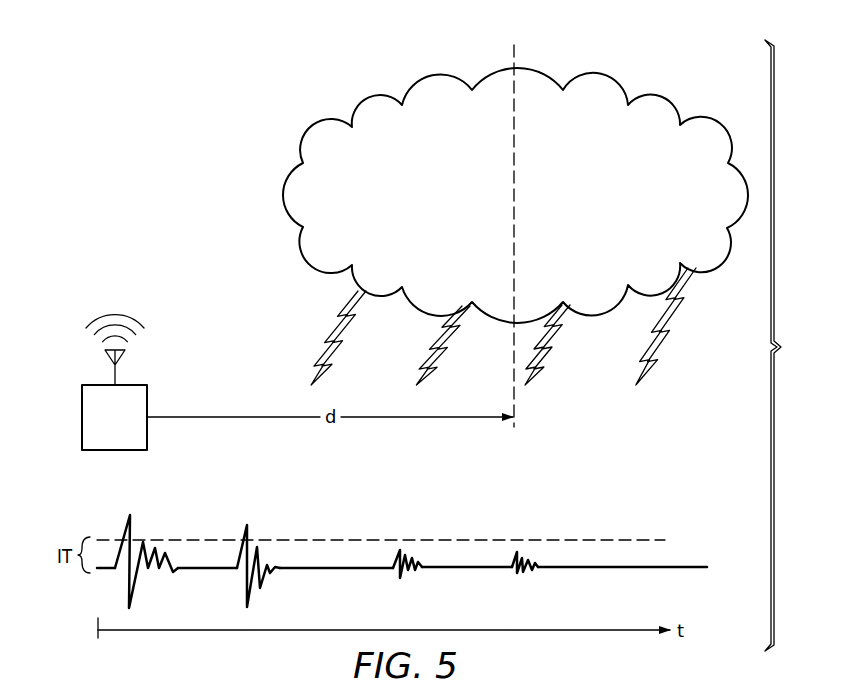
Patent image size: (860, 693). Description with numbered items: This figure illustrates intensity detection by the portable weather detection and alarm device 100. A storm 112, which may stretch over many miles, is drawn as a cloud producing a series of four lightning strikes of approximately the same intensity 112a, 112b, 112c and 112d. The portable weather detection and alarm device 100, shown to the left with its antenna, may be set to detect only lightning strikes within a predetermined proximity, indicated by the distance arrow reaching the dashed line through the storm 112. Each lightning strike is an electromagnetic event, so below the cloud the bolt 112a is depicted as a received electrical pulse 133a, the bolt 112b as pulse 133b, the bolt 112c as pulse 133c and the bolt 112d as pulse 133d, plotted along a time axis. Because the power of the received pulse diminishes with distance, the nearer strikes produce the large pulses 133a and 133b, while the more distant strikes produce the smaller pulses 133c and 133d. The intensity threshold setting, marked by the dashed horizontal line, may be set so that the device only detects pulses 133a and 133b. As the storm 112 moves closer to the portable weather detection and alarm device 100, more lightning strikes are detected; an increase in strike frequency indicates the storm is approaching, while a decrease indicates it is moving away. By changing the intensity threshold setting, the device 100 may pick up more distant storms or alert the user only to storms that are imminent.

The storm 112 is at (603, 76).
The lightning strike 112a is at (322, 358).
The lightning strike 112b is at (428, 358).
The lightning strike 112c is at (553, 358).
The lightning strike 112d is at (662, 358).
The portable weather detection and alarm device 100 is at (82, 425).
The received electrical pulse 133a is at (146, 526).
The received electrical pulse 133b is at (264, 526).
The received electrical pulse 133c is at (409, 526).
The received electrical pulse 133d is at (533, 526).